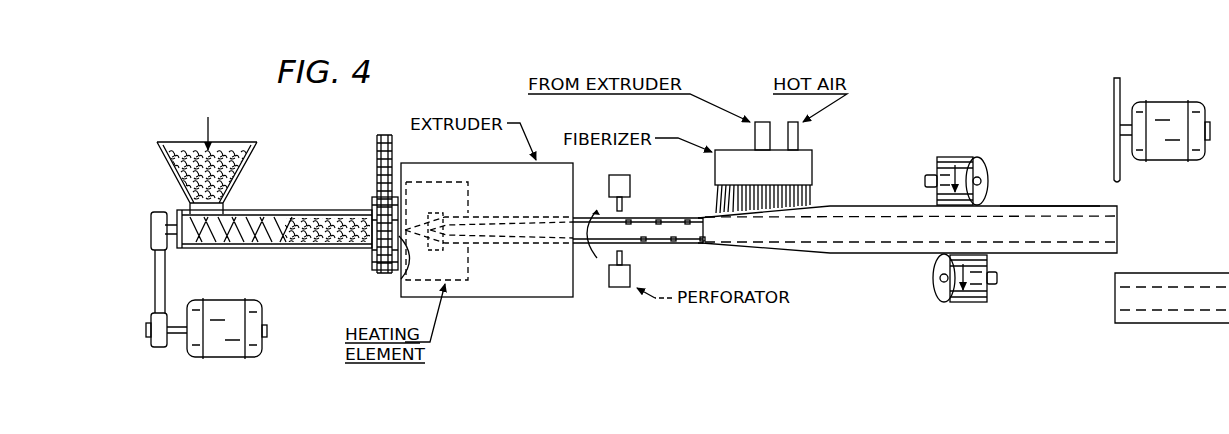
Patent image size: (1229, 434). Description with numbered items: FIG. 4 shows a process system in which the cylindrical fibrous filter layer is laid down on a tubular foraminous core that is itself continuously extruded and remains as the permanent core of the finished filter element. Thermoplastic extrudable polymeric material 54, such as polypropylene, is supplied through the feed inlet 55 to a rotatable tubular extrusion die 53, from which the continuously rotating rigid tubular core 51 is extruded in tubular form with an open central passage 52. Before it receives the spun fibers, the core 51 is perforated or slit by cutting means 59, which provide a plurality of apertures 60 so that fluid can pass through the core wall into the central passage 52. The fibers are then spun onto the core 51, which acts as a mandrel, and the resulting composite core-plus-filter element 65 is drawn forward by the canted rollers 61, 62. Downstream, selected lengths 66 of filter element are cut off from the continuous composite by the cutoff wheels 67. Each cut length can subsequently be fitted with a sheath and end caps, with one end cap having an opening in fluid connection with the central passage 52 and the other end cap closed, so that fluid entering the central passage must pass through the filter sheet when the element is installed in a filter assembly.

The tubular core 51 is at (602, 245).
The open central passage 52 is at (1110, 228).
The rotatable tubular extrusion die 53 is at (488, 246).
The thermoplastic extrudable polymeric material 54 is at (238, 170).
The feed inlet 55 is at (399, 279).
The cutting means 59 is at (633, 277).
The apertures 60 is at (702, 240).
The canted roller 61 is at (980, 163).
The canted roller 62 is at (939, 298).
The composite core-plus-filter element 65 is at (1049, 202).
The selected lengths of filter element 66 is at (1190, 313).
The cutoff wheels 67 is at (1113, 99).